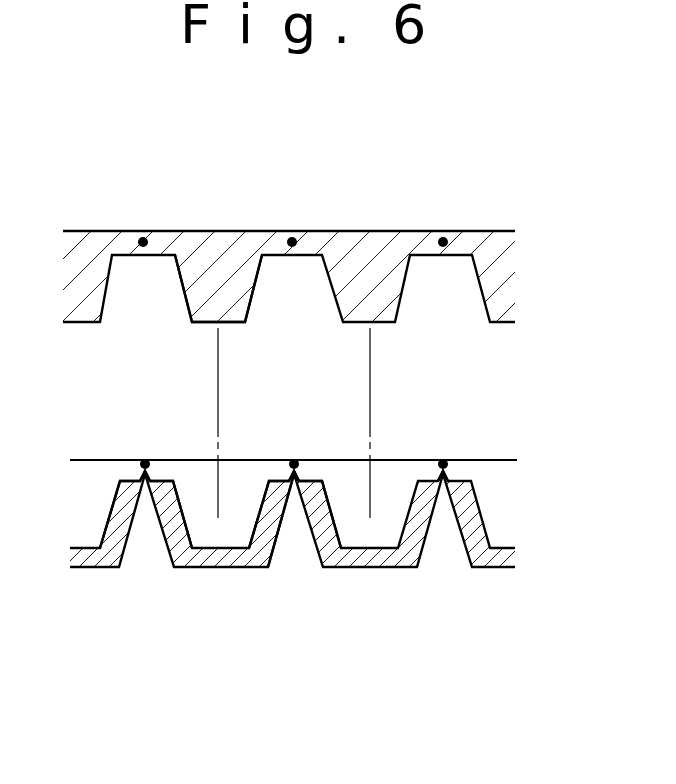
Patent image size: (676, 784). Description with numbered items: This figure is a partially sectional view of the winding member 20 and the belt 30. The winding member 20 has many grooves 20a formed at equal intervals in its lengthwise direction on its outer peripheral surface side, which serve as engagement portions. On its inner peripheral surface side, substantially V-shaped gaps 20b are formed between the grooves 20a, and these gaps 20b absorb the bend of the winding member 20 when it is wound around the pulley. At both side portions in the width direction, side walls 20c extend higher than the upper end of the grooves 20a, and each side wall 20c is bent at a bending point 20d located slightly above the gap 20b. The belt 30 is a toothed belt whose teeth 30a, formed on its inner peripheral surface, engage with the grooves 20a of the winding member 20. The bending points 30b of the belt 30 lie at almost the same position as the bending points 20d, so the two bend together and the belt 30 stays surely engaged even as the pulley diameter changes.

The belt 30 is at (361, 230).
The teeth 30a is at (212, 323).
The bending points 30b is at (145, 237).
The winding member 20 is at (377, 572).
The grooves 20a is at (197, 520).
The gaps 20b is at (293, 540).
The side walls 20c is at (225, 547).
The bending point 20d is at (444, 459).